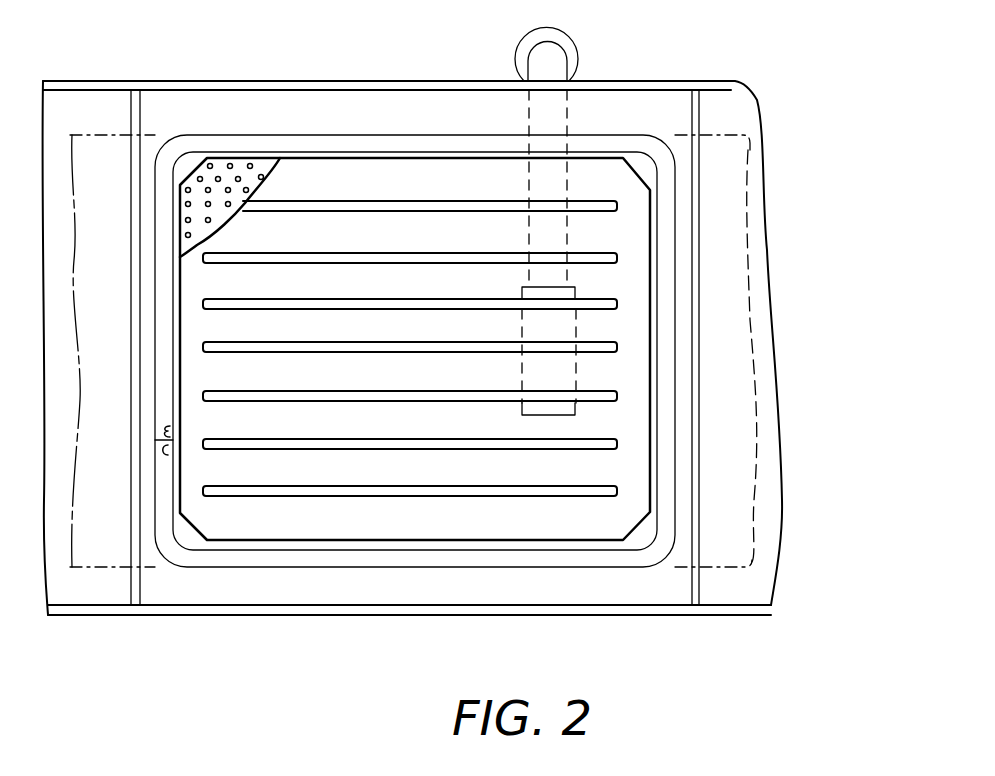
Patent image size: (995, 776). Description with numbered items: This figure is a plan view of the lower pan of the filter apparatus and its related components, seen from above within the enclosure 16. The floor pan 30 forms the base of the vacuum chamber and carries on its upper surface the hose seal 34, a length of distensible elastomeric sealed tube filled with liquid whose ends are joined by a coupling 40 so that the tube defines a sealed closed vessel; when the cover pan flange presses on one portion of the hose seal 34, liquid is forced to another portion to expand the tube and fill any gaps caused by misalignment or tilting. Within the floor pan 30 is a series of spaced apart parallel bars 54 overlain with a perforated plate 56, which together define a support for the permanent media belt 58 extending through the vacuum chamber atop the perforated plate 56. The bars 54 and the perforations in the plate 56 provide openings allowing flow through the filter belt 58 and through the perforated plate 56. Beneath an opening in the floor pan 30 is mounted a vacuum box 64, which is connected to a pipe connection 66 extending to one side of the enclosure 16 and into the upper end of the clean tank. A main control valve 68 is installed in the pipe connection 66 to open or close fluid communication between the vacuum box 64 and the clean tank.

The enclosure 16 is at (452, 617).
The floor pan 30 is at (192, 593).
The hose seal 34 is at (260, 562).
The coupling 40 is at (163, 426).
The spaced apart parallel bars 54 is at (291, 211).
The perforated plate 56 is at (210, 165).
The permanent media belt 58 is at (89, 558).
The vacuum box 64 is at (557, 413).
The pipe connection 66 is at (540, 77).
The main control valve 68 is at (578, 50).